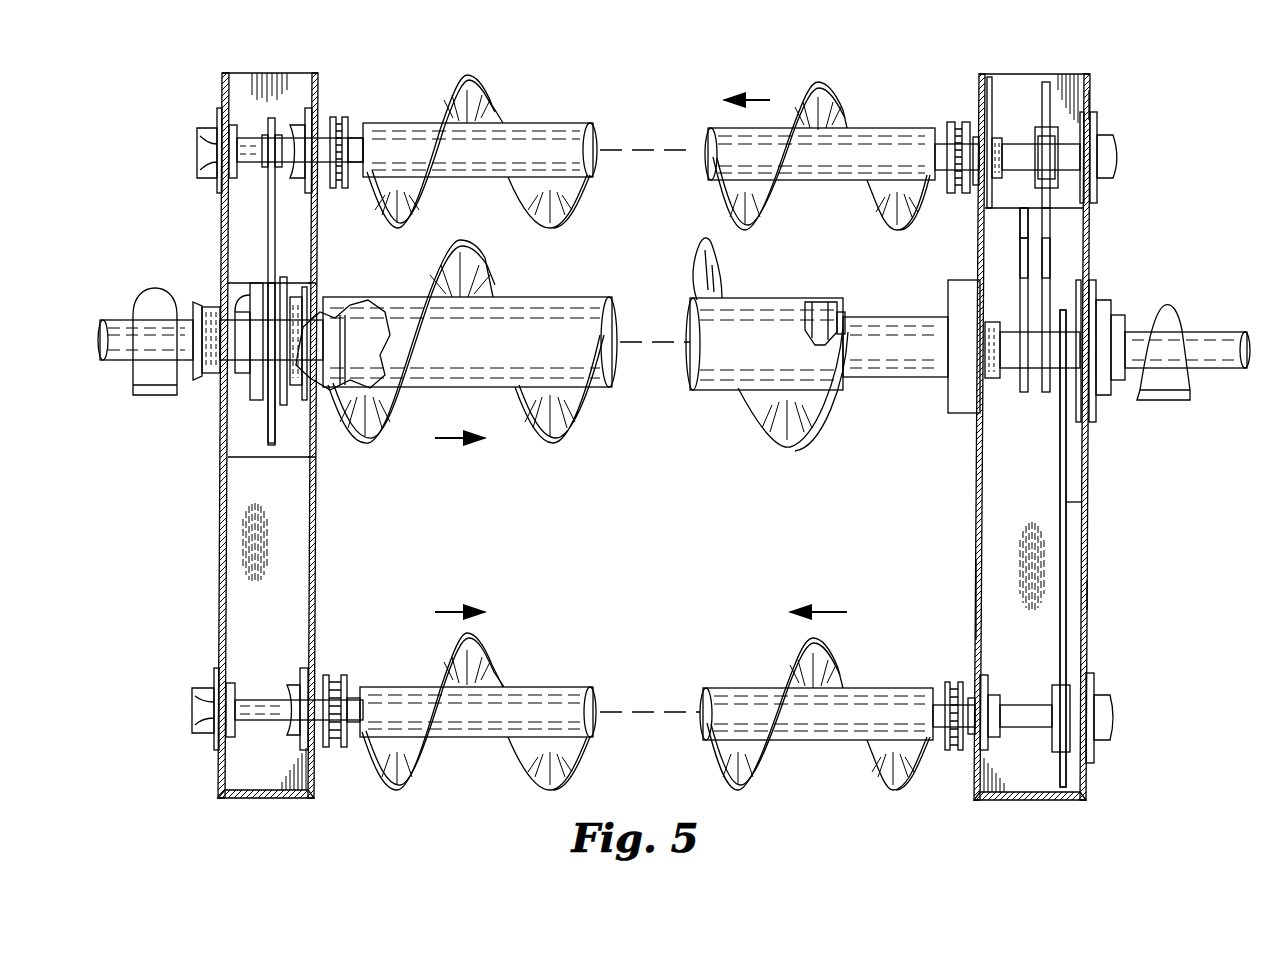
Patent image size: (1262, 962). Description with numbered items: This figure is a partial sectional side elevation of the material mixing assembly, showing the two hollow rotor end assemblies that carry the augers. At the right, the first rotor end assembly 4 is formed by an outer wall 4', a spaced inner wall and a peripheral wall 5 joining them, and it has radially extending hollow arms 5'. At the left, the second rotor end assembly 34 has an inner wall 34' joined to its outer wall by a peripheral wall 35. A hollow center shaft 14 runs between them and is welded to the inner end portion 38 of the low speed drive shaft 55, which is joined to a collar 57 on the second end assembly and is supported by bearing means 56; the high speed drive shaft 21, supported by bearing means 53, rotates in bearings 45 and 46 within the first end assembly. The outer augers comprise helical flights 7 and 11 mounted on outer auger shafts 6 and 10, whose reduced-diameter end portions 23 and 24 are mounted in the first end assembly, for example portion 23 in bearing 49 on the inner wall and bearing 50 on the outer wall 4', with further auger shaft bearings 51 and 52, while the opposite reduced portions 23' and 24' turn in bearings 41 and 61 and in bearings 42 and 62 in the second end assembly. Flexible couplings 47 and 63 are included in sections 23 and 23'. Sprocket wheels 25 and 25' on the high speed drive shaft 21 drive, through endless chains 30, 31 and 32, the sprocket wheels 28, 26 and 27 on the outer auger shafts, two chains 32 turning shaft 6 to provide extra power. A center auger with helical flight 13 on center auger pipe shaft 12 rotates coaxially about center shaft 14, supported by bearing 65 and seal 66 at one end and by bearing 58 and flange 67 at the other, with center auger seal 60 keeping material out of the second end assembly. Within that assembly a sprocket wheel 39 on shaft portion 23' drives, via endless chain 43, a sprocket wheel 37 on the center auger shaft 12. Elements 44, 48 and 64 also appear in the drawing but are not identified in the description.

The first rotor end assembly 4 is at (993, 437).
The outer wall 4' is at (1107, 437).
The peripheral wall 5 is at (1010, 679).
The radially extending hollow arms 5' is at (1112, 334).
The outer auger shaft 6 is at (460, 177).
The helical flight 7 is at (550, 228).
The outer auger shaft 10 is at (399, 687).
The helical flight 11 is at (818, 711).
The center auger pipe shaft 12 is at (514, 297).
The helical flight 13 is at (554, 444).
The center shaft 14 is at (368, 332).
The high speed drive shaft 21 is at (1218, 368).
The end portion 23 is at (945, 127).
The end portion 23' is at (203, 176).
The end portion 24 is at (931, 688).
The end portion 24' is at (294, 691).
The sprocket wheel 25 is at (1039, 335).
The sprocket wheel 25' is at (975, 335).
The sprocket wheel 26 is at (1020, 219).
The sprocket wheel 27 is at (1050, 228).
The sprocket wheel 28 is at (1066, 662).
The endless drive chain 30 is at (1082, 502).
The endless drive chain 31 is at (1020, 260).
The endless drive chain 32 is at (1050, 262).
The second rotor end assembly 34 is at (319, 298).
The inner wall 34' is at (341, 435).
The peripheral wall 35 is at (309, 546).
The sprocket wheel 37 is at (268, 430).
The inner end portion 38 is at (338, 305).
The sprocket wheel 39 is at (271, 118).
The bearing 41 is at (197, 165).
The bearing 42 is at (201, 688).
The endless drive chain 43 is at (266, 210).
The gear box 44 is at (948, 400).
The high speed drive shaft bearing 45 is at (985, 366).
The high speed drive shaft bearing 46 is at (1112, 318).
The flexible coupling 47 is at (958, 122).
The sprocket 48 is at (952, 682).
The bearing 49 is at (996, 138).
The bearing 50 is at (1113, 150).
The auger shaft bearing 51 is at (996, 695).
The auger shaft bearing 52 is at (1110, 716).
The bearing means 53 is at (1143, 400).
The low speed drive shaft 55 is at (118, 320).
The bearing means 56 is at (151, 396).
The collar 57 is at (207, 380).
The bearing 58 is at (258, 388).
The center auger seal 60 is at (305, 400).
The bearing 61 is at (306, 118).
The bearing 62 is at (293, 685).
The flexible coupling 63 is at (335, 190).
The sprocket 64 is at (334, 675).
The bearing 65 is at (825, 302).
The seal 66 is at (845, 315).
The flange 67 is at (310, 275).